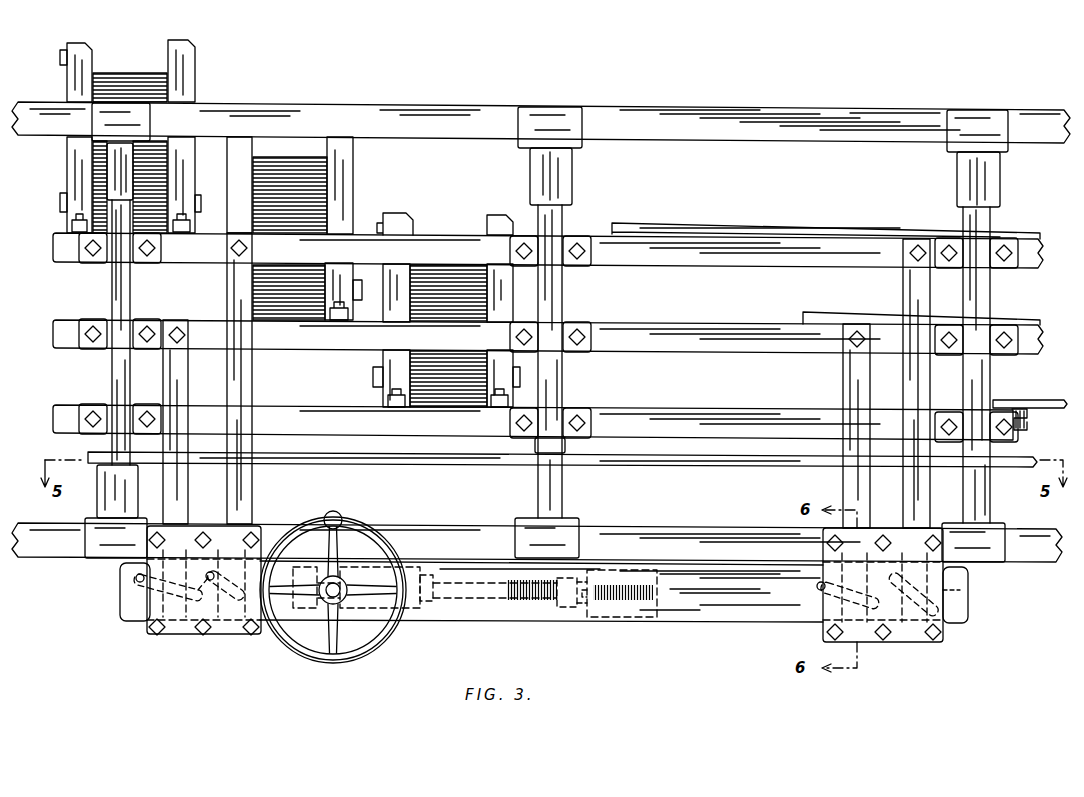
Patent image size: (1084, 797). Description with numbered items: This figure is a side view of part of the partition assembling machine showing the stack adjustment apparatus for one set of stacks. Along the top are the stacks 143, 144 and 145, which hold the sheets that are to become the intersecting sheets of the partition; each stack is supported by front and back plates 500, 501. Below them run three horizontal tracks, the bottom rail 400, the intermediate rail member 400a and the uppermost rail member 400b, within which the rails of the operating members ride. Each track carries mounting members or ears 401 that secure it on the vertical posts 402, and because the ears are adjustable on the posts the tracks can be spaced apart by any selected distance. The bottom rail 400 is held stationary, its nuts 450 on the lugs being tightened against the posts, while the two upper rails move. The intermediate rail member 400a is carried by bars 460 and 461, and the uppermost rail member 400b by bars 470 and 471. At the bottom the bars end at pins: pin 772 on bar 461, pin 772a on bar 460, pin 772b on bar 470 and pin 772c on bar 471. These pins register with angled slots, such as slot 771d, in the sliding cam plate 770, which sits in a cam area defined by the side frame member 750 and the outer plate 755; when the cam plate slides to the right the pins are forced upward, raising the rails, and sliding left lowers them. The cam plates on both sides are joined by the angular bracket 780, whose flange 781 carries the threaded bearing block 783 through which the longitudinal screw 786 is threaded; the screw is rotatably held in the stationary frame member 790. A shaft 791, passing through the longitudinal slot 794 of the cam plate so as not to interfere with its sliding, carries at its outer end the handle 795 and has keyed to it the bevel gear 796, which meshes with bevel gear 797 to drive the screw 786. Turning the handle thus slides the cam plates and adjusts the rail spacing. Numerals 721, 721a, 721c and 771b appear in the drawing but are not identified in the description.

The stack 143 is at (121, 67).
The stack 144 is at (287, 118).
The stack 145 is at (443, 228).
The bottom rail 400 is at (700, 420).
The intermediate rail member 400a is at (715, 318).
The uppermost rail member 400b is at (712, 247).
The mounting members or ears 401 is at (107, 347).
The post 402 is at (112, 290).
The nut 450 is at (1015, 427).
The bar 460 is at (168, 355).
The bar 461 is at (845, 382).
The bar 470 is at (228, 275).
The bar 471 is at (904, 283).
The front plate 500 is at (75, 75).
The back plate 501 is at (187, 57).
The pin 721 is at (817, 588).
The pin 721a is at (211, 574).
The pin 721c is at (945, 611).
The frame member 750 is at (668, 540).
The outer plate 755 is at (145, 622).
The sliding cam plate 770 is at (148, 615).
The pivot 771b is at (137, 581).
The slot 771d is at (262, 640).
The pin 772 is at (838, 597).
The pin 772a is at (165, 590).
The pin 772b is at (241, 600).
The pin 772c is at (960, 593).
The angular bracket 780 is at (605, 568).
The flange 781 is at (595, 612).
The threaded bearing block 783 is at (562, 605).
The longitudinal screw 786 is at (510, 602).
The frame member 790 is at (428, 570).
The shaft 791 is at (336, 597).
The longitudinal slot 794 is at (325, 600).
The handle 795 is at (402, 646).
The bevel gear 796 is at (350, 560).
The bevel gear 797 is at (380, 560).